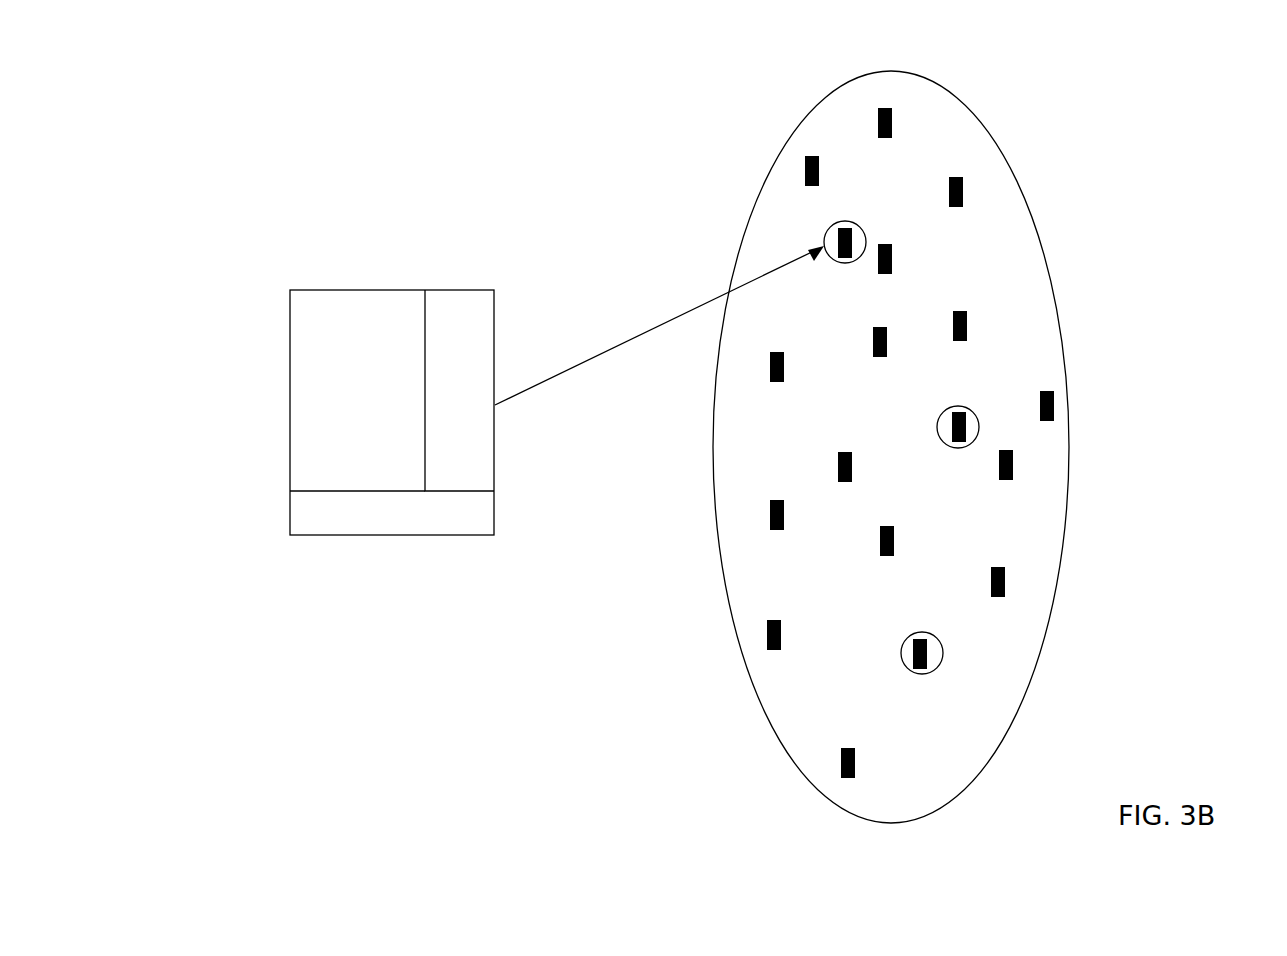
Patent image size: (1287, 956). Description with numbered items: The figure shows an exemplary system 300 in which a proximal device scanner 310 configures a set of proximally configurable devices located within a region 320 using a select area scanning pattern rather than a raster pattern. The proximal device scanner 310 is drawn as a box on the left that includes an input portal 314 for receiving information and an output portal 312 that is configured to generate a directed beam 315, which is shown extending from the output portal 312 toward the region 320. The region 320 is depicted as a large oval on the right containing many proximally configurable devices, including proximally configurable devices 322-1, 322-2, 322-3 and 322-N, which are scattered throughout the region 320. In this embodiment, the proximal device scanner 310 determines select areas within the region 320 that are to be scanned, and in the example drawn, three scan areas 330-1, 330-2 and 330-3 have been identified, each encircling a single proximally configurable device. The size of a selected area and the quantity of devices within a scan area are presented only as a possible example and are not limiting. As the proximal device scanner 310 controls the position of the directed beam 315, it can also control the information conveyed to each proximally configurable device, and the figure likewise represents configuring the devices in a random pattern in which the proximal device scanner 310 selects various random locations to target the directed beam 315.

The system 300 is at (224, 67).
The proximal device scanner 310 is at (290, 408).
The output portal 312 is at (485, 440).
The input portal 314 is at (393, 535).
The directed beam 315 is at (549, 378).
The region 320 is at (727, 281).
The proximally configurable device 322-1 is at (1055, 406).
The proximally configurable device 322-2 is at (805, 170).
The proximally configurable device 322-3 is at (964, 190).
The proximally configurable device 322-N is at (842, 763).
The scan area 330-1 is at (824, 240).
The scan area 330-2 is at (901, 653).
The scan area 330-3 is at (938, 427).